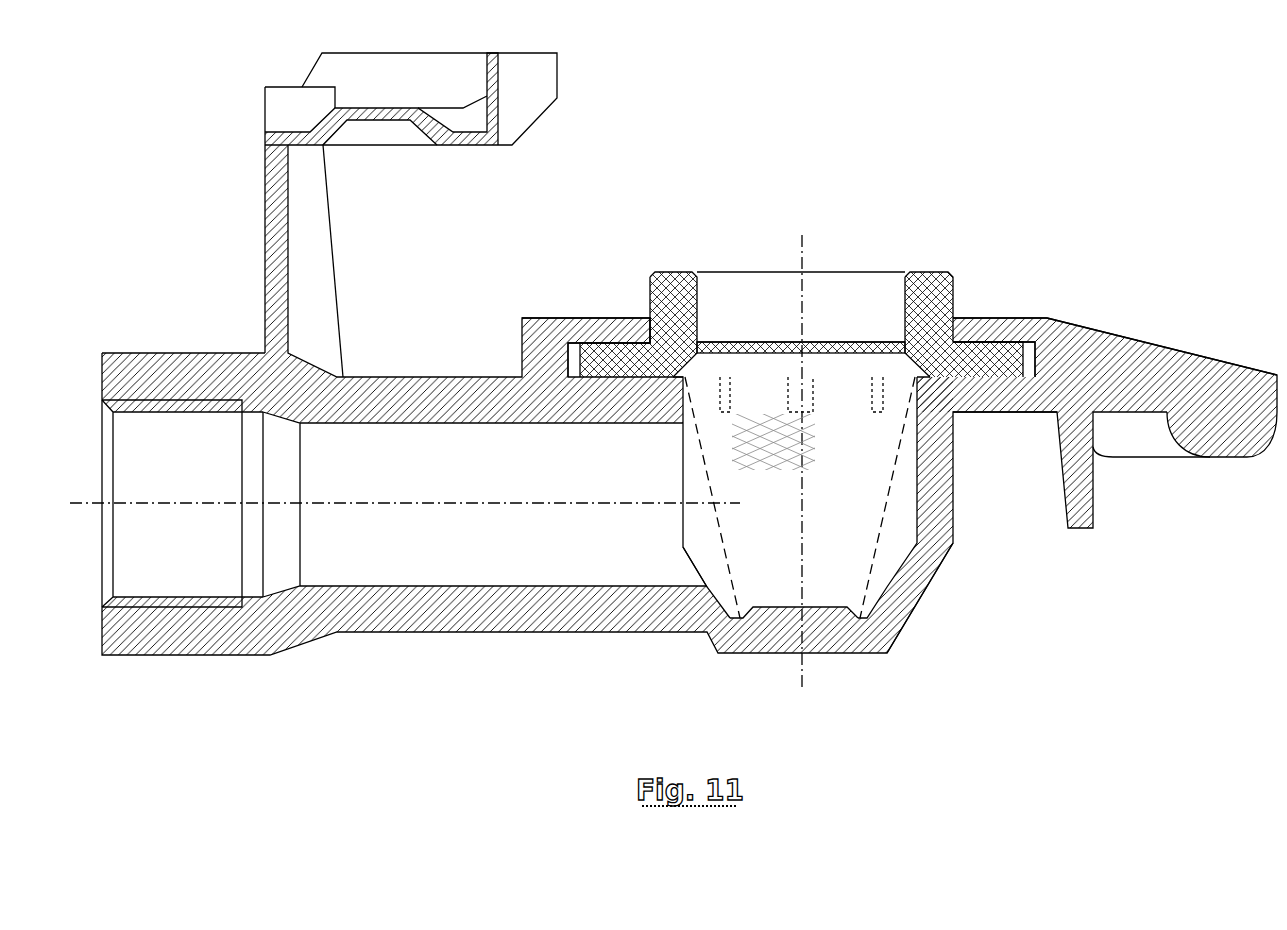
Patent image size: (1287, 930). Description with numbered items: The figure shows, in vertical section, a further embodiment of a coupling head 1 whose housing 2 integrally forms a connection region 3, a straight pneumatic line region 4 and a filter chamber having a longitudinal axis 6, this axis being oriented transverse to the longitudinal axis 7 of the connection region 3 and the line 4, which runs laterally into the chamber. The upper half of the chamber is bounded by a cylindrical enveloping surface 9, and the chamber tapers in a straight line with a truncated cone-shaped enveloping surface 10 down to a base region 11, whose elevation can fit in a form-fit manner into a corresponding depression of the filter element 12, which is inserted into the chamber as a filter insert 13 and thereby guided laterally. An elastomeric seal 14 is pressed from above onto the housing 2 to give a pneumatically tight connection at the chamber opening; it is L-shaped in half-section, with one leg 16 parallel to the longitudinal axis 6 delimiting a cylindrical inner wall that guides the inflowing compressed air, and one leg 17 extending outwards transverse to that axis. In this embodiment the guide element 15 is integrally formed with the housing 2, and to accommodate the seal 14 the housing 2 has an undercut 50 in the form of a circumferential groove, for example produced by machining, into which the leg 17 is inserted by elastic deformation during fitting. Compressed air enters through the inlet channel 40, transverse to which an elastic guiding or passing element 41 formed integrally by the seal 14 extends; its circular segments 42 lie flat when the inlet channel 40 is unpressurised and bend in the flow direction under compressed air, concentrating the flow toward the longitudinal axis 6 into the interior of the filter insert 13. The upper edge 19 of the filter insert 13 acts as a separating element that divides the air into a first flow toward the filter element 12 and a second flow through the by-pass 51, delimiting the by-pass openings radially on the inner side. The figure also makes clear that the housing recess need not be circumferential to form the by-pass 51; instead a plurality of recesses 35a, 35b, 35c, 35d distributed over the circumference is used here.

The coupling head 1 is at (673, 365).
The housing 2 is at (552, 617).
The connection region 3 is at (185, 568).
The pneumatic line region 4 is at (478, 568).
The longitudinal axis 6 is at (800, 682).
The longitudinal axis 7 is at (100, 503).
The cylindrical enveloping surface 9 is at (917, 470).
The truncated cone-shaped enveloping surface 10 is at (905, 562).
The base region 11 is at (828, 598).
The filter element 12 is at (675, 628).
The filter insert 13 is at (723, 547).
The seal 14 is at (938, 292).
The guide element 15 is at (605, 330).
The leg 16 is at (663, 288).
The leg 17 is at (983, 352).
The edge 19 is at (915, 380).
The recess 35a is at (732, 393).
The recess 35b is at (816, 393).
The recess 35c is at (872, 412).
The recess 35d is at (925, 387).
The inlet channel 40 is at (836, 304).
The guiding or passing element 41 is at (718, 330).
The circular segments 42 is at (777, 347).
The undercut 50 is at (1028, 352).
The by-pass 51 is at (678, 398).